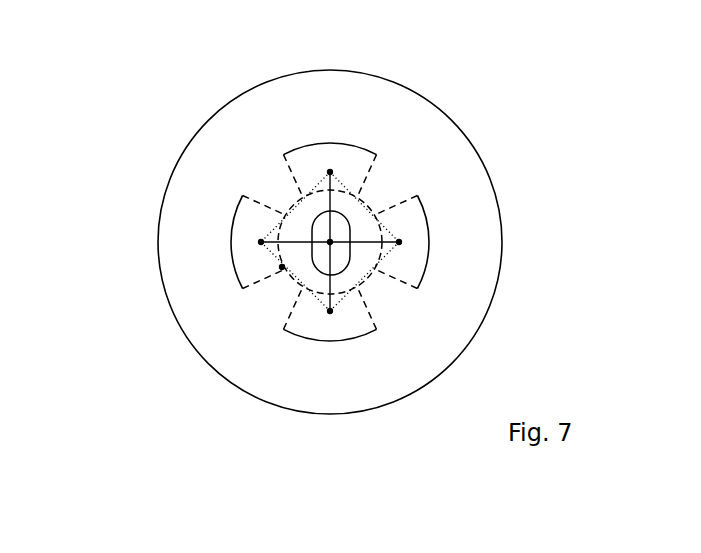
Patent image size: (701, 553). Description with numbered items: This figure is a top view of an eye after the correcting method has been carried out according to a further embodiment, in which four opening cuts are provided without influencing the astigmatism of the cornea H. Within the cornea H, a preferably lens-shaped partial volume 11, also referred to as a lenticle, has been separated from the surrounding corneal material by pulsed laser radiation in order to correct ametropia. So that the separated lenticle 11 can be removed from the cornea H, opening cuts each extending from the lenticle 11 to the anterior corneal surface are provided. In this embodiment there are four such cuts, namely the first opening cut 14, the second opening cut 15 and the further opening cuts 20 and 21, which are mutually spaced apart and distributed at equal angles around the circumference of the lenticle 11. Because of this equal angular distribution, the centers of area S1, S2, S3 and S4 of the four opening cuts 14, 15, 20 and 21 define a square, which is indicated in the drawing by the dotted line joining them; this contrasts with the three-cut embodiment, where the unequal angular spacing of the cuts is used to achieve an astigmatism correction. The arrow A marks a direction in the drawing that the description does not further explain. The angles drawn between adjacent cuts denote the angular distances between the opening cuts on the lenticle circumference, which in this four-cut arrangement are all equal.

The partial volume 11 is at (282, 268).
The first opening cut 14 is at (335, 145).
The second opening cut 15 is at (423, 277).
The opening cut 20 is at (328, 342).
The opening cut 21 is at (239, 204).
The cornea H is at (158, 243).
The rotation direction A is at (368, 416).
The center of area S1 is at (330, 173).
The center of area S2 is at (399, 243).
The center of area S3 is at (330, 312).
The center of area S4 is at (261, 243).